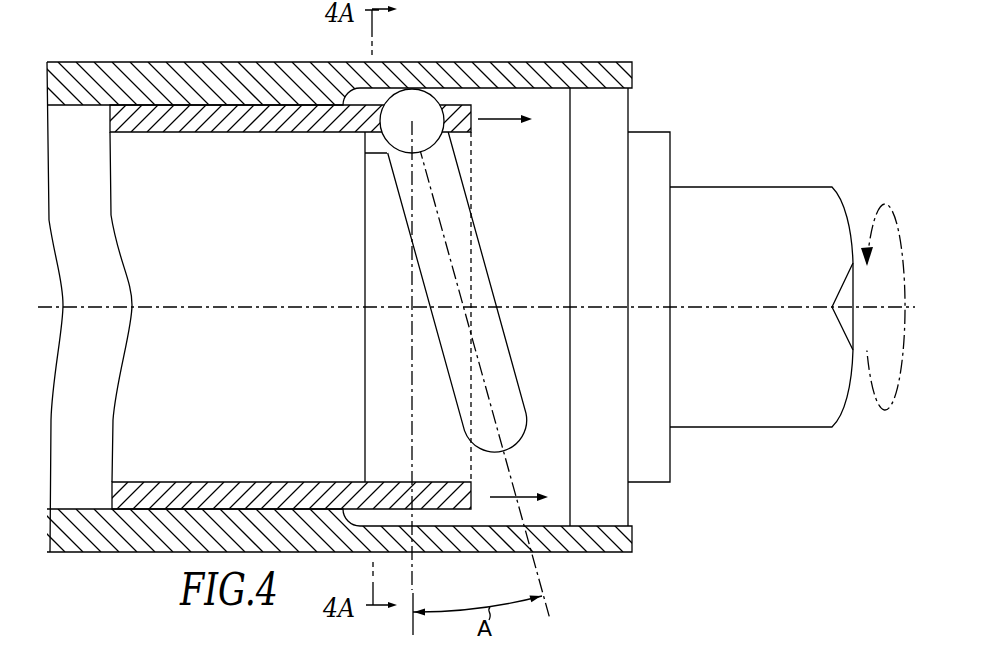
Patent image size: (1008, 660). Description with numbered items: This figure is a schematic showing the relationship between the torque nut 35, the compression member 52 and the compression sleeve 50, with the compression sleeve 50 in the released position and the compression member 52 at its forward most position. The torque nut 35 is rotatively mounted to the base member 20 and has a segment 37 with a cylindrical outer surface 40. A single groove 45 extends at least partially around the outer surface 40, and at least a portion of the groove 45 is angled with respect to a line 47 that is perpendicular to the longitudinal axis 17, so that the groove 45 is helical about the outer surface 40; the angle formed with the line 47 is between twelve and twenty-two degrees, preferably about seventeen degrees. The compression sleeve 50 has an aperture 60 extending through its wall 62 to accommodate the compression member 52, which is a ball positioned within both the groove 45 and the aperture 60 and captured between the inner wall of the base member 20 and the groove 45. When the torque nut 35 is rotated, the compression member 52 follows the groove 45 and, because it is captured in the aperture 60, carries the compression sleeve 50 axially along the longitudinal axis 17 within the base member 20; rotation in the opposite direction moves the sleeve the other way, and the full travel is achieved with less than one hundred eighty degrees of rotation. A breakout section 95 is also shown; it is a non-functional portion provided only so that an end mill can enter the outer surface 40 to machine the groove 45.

The longitudinal axis 17 is at (90, 305).
The base member 20 is at (146, 70).
The torque nut 35 is at (710, 198).
The segment 37 is at (548, 367).
The outer surface 40 is at (547, 218).
The groove 45 is at (404, 176).
The line perpendicular to the longitudinal axis 47 is at (412, 420).
The compression sleeve 50 is at (203, 126).
The compression member 52 is at (422, 97).
The aperture 60 is at (388, 84).
The wall 62 is at (283, 124).
The breakout section 95 is at (367, 142).